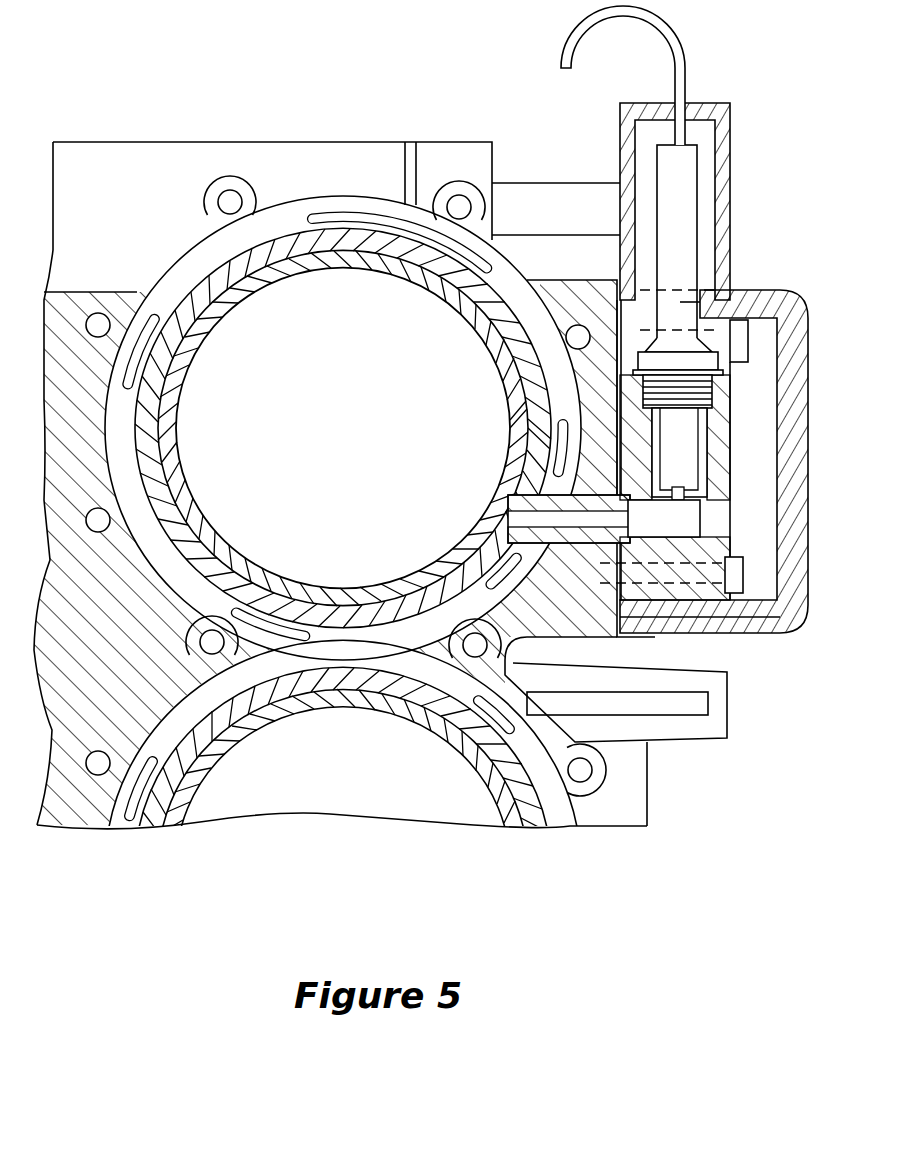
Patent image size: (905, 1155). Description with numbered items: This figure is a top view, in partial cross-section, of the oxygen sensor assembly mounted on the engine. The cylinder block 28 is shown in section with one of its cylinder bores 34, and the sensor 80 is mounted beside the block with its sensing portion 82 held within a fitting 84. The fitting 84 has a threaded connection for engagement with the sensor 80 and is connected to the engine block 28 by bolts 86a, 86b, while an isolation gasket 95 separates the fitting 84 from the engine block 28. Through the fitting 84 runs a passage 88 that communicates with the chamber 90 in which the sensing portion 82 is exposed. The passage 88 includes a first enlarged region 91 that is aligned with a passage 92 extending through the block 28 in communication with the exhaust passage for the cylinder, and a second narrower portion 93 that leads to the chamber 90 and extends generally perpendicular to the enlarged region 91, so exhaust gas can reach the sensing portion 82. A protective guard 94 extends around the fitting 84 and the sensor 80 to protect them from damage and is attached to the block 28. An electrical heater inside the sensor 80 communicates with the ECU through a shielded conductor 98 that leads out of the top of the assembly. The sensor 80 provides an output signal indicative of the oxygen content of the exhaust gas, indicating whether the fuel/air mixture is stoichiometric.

The cylinder block 28 is at (535, 437).
The cylinder bore 34 is at (425, 283).
The sensor 80 is at (713, 337).
The sensing portion 82 is at (680, 456).
The fitting 84 is at (733, 487).
The bolt 86a is at (748, 340).
The bolt 86b is at (745, 578).
The passage 88 is at (735, 625).
The chamber 90 is at (700, 437).
The first enlarged region 91 is at (700, 560).
The passage 92 is at (515, 522).
The second narrower portion 93 is at (690, 497).
The protective guard 94 is at (768, 560).
The isolation gasket 95 is at (610, 398).
The shielded conductor 98 is at (683, 78).